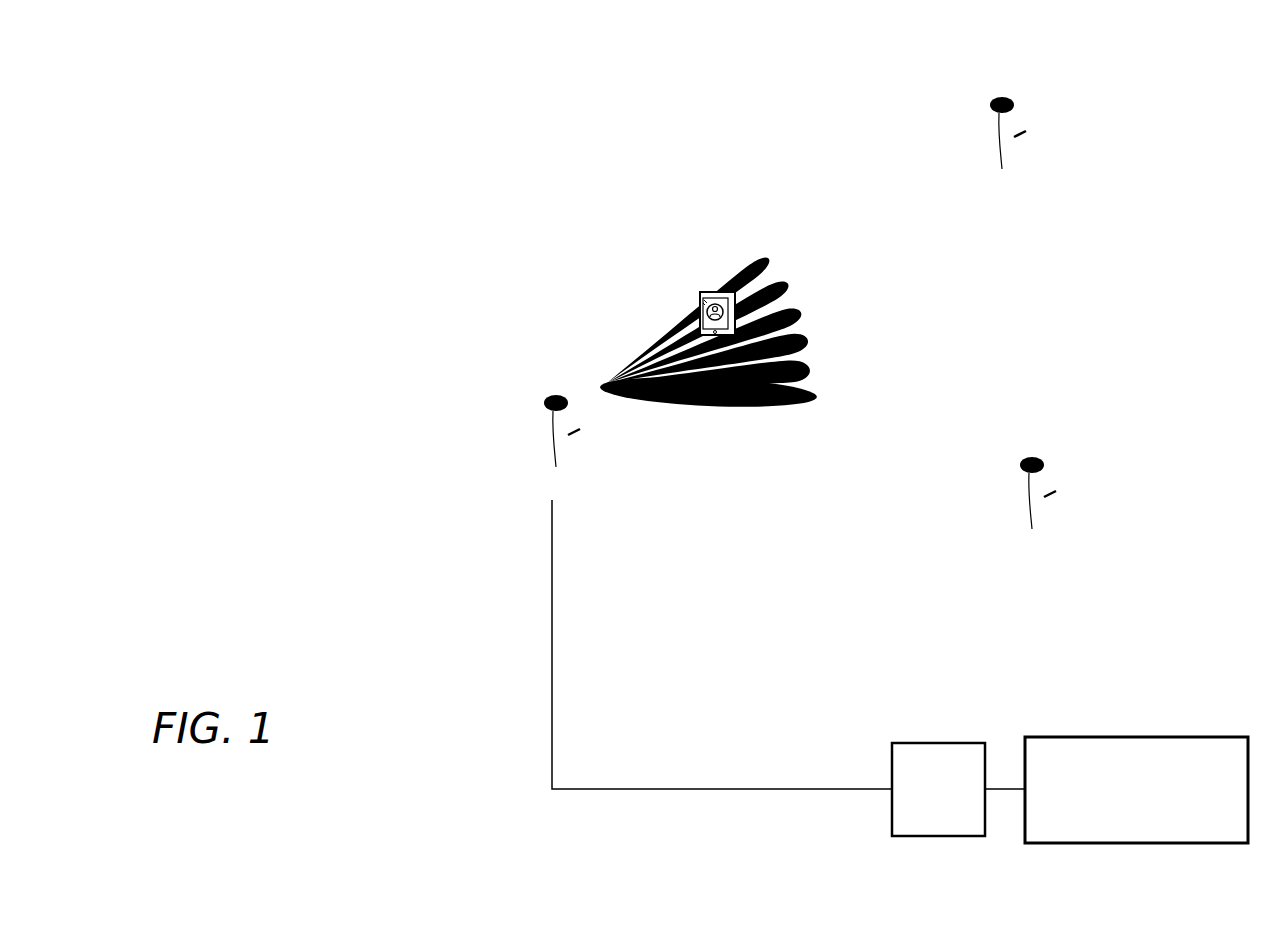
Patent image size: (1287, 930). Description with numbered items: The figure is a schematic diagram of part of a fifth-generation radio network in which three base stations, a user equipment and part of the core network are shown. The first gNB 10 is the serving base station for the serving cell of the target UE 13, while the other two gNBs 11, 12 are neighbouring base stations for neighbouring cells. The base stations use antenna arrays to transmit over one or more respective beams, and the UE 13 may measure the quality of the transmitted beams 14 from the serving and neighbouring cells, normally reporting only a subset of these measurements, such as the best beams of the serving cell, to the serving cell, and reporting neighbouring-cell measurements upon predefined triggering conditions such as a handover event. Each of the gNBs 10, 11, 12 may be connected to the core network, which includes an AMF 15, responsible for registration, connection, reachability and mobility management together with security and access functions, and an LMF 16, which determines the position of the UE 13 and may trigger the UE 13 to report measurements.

The first gNB 10 is at (562, 392).
The second gNB 11 is at (1025, 107).
The third gNB 12 is at (1053, 465).
The user equipment 13 is at (710, 292).
The transmitted beams 14 is at (682, 403).
The AMF 15 is at (940, 837).
The LMF 16 is at (1070, 843).